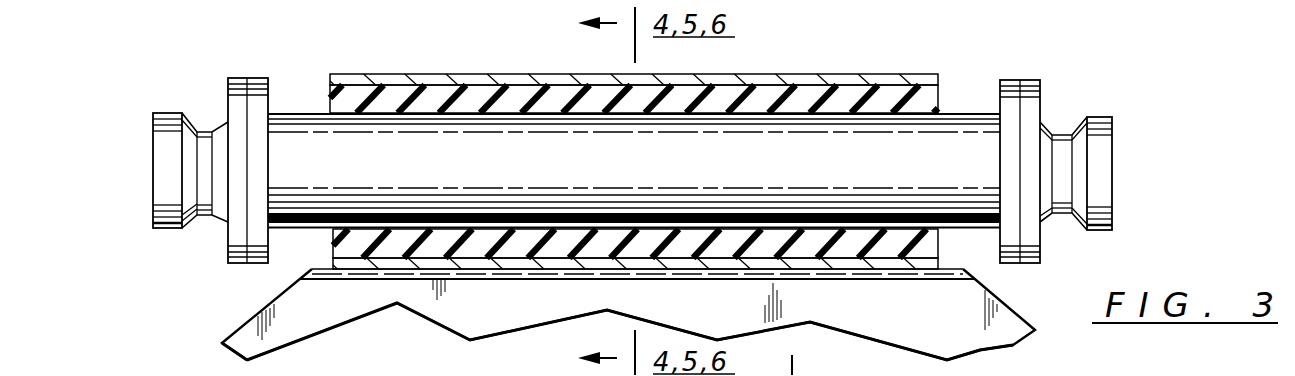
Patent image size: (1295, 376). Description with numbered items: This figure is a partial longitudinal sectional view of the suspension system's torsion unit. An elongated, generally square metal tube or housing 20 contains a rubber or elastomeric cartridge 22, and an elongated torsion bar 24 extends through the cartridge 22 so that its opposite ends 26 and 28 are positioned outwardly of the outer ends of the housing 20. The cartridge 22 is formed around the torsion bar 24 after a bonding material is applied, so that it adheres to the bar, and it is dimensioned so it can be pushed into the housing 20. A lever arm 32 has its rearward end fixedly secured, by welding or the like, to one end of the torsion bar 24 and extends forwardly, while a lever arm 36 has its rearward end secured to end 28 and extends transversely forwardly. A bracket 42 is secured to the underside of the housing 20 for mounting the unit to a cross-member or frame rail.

The tube or housing 20 is at (879, 62).
The rubber or elastomeric cartridge 22 is at (447, 97).
The torsion bar 24 is at (964, 145).
The end of torsion bar 26 is at (1102, 168).
The end of torsion bar 28 is at (165, 175).
The lever arm 32 is at (1060, 92).
The lever arm 36 is at (205, 92).
The bracket 42 is at (238, 305).